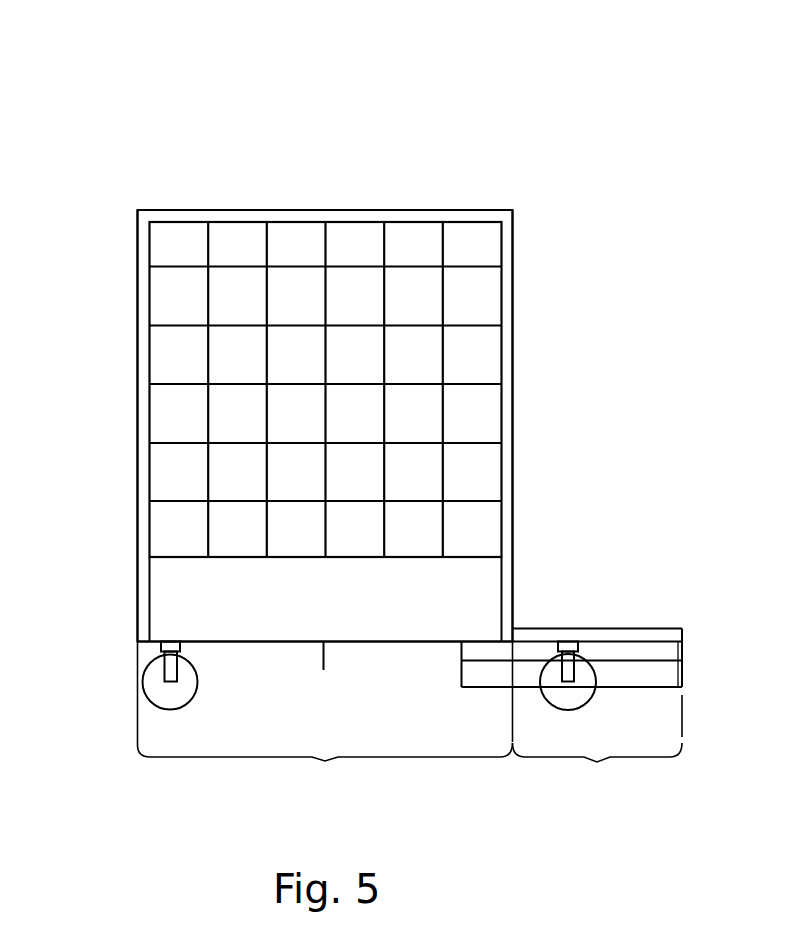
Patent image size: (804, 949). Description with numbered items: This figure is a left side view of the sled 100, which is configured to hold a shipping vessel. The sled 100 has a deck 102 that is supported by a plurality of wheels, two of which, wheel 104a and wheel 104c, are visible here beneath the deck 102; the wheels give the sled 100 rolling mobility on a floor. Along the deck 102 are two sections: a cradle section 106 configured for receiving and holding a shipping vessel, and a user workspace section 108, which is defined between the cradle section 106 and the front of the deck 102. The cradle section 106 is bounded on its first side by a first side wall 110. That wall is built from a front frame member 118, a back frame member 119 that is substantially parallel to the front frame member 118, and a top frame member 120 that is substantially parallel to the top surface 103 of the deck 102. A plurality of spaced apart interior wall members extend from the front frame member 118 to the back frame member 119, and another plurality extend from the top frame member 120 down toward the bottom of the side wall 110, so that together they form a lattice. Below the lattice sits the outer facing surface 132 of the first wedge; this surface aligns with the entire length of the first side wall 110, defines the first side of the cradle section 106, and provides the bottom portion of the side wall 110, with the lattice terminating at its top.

The sled 100 is at (560, 83).
The deck 102 is at (367, 654).
The top surface 103 is at (572, 628).
The wheel 104a is at (566, 710).
The wheel 104c is at (168, 710).
The cradle section 106 is at (325, 774).
The user workspace section 108 is at (598, 773).
The first side wall 110 is at (252, 197).
The front frame member 118 is at (513, 305).
The back frame member 119 is at (137, 335).
The top frame member 120 is at (379, 210).
The outer facing surface 132 is at (343, 612).